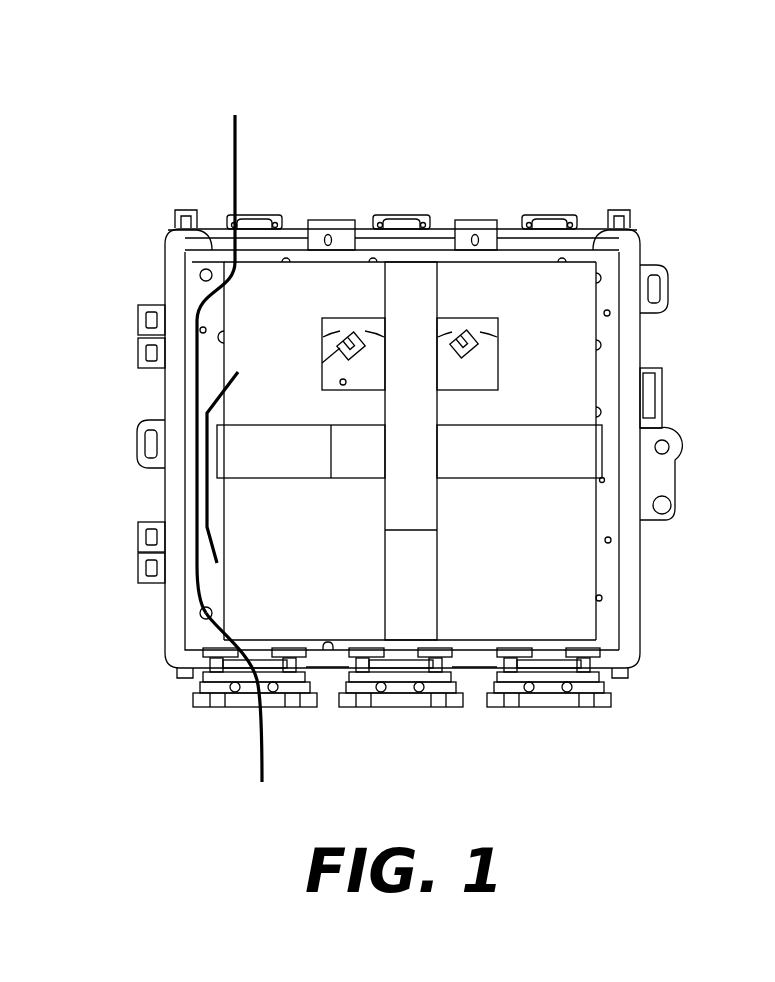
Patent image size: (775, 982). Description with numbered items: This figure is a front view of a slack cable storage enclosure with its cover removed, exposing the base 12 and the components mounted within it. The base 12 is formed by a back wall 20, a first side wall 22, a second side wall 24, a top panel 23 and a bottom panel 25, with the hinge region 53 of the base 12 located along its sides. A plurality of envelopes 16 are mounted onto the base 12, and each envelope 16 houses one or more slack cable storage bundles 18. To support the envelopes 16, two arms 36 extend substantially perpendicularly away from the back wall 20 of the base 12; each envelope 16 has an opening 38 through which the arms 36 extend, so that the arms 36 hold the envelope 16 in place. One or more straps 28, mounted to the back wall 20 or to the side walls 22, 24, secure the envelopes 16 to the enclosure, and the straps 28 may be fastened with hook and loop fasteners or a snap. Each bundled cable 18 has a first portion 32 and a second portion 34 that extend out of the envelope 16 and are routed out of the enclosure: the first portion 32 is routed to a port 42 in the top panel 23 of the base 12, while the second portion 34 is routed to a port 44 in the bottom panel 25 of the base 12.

The base 12 is at (642, 126).
The envelope 16 is at (542, 600).
The slack cable storage bundle 18 is at (331, 320).
The back wall 20 is at (190, 256).
The first side wall 22 is at (173, 517).
The top panel 23 is at (433, 223).
The second side wall 24 is at (633, 540).
The bottom panel 25 is at (334, 662).
The strap 28 is at (430, 375).
The first portion 32 is at (238, 140).
The second portion 34 is at (258, 737).
The arm 36 is at (490, 343).
The opening 38 is at (478, 392).
The port 42 is at (258, 232).
The port 44 is at (230, 702).
The hinge region 53 is at (124, 345).